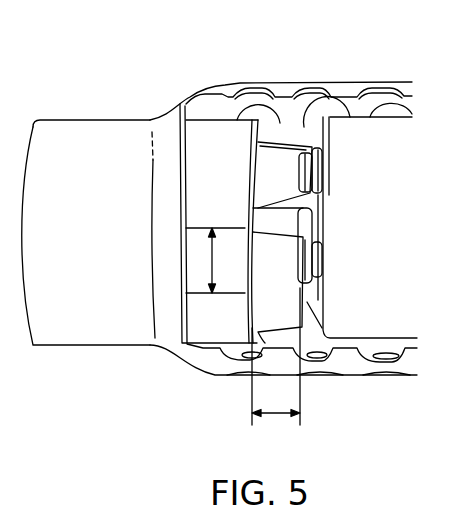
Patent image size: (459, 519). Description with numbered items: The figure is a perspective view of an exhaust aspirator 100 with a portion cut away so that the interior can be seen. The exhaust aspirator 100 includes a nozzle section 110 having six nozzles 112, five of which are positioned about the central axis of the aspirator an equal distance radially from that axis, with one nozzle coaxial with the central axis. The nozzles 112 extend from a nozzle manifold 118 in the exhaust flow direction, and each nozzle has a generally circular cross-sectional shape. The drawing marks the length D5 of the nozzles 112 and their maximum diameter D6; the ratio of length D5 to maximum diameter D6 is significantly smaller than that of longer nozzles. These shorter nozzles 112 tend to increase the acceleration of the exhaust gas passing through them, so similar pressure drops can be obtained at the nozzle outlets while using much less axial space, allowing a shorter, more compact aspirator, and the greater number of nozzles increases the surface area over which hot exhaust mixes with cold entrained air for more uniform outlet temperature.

The exhaust aspirator 100 is at (348, 72).
The nozzle section 110 is at (230, 97).
The nozzles 112 is at (277, 153).
The nozzle manifold 118 is at (200, 150).
The length of the nozzles D5 is at (278, 414).
The maximum diameter of the nozzles D6 is at (208, 273).